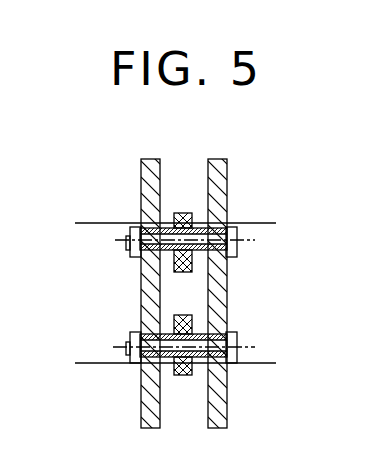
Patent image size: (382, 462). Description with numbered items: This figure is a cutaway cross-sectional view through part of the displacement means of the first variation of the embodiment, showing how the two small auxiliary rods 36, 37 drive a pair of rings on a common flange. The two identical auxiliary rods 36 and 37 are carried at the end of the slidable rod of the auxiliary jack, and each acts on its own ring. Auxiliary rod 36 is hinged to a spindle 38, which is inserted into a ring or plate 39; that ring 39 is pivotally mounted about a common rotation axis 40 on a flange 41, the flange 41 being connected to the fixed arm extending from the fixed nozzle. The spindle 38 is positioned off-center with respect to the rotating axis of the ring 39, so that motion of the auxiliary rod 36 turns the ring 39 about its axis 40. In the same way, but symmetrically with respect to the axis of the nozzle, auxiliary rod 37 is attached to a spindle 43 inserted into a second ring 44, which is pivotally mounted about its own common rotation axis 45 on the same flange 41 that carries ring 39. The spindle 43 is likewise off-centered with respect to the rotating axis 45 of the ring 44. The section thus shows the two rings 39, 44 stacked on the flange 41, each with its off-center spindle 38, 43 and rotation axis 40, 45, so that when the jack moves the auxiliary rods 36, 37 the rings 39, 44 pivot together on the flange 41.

The auxiliary rod 36 is at (183, 213).
The auxiliary rod 37 is at (180, 380).
The spindle 38 is at (130, 247).
The ring 39 is at (142, 196).
The common rotation axis 40 is at (93, 222).
The flange 41 is at (220, 299).
The spindle 43 is at (133, 345).
The ring 44 is at (145, 397).
The common rotation axis 45 is at (95, 366).